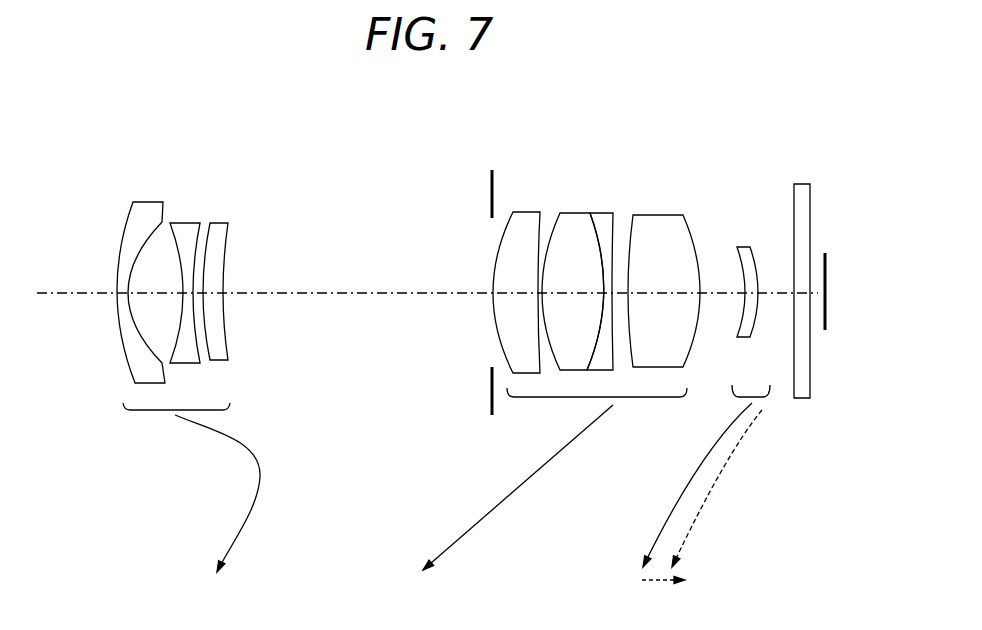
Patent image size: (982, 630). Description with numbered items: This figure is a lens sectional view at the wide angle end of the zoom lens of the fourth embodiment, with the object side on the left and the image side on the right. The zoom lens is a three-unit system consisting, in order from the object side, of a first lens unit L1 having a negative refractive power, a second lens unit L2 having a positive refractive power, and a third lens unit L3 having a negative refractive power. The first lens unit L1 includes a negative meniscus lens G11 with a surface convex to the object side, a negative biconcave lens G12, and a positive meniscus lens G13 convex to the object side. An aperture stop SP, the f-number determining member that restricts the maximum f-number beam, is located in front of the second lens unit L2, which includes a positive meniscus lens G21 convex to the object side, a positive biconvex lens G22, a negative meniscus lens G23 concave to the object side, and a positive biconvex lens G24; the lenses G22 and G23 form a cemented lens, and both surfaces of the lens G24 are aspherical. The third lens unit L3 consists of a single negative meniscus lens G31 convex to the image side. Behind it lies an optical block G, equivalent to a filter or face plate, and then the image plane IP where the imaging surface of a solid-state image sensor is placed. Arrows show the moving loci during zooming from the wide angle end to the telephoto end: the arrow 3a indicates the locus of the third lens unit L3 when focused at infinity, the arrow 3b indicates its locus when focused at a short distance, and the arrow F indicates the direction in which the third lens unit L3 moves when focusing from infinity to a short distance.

The first lens unit L1 is at (230, 123).
The negative meniscus lens G11 is at (146, 200).
The negative biconcave lens G12 is at (185, 221).
The positive meniscus lens G13 is at (215, 222).
The aperture stop SP is at (490, 177).
The second lens unit L2 is at (650, 115).
The positive meniscus lens G21 is at (530, 210).
The positive biconvex lens G22 is at (573, 213).
The negative meniscus lens G23 is at (603, 213).
The positive biconvex lens G24 is at (660, 213).
The third lens unit L3 is at (750, 113).
The negative meniscus lens G31 is at (750, 247).
The optical block G is at (810, 113).
The image plane IP is at (827, 253).
The moving locus arrow (infinity focus) 3a is at (667, 507).
The moving locus arrow (short-distance focus) 3b is at (707, 483).
The focusing direction arrow F is at (672, 582).